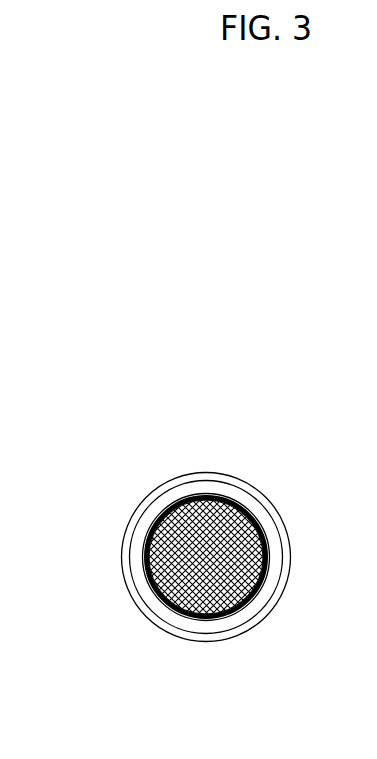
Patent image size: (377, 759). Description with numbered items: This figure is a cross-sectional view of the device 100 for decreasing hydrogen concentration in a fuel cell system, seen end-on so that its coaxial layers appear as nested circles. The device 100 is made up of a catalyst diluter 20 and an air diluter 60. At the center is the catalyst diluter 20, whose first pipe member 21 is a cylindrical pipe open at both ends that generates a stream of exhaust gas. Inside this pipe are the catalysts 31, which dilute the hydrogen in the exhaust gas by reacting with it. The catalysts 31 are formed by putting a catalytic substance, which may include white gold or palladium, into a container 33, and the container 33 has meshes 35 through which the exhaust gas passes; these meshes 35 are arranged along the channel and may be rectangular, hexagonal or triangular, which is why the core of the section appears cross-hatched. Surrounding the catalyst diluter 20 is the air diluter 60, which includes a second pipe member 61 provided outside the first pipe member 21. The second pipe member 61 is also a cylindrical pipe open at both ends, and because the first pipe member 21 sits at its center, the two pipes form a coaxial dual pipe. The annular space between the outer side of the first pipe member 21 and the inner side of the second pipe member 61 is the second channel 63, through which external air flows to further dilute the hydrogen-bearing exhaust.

The device for decreasing hydrogen concentration 100 is at (220, 392).
The air diluter 60 is at (275, 502).
The second pipe member 61 is at (287, 547).
The second channel 63 is at (134, 560).
The catalyst diluter 20 is at (90, 683).
The first pipe member 21 is at (176, 618).
The catalysts 31 is at (158, 594).
The container 33 is at (258, 600).
The meshes 35 is at (215, 556).